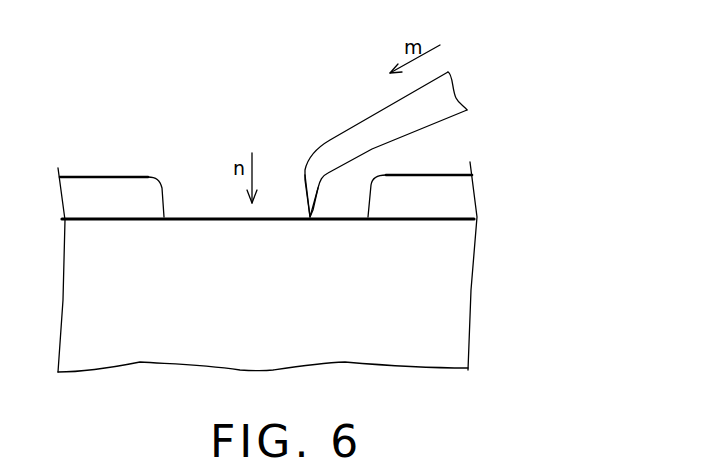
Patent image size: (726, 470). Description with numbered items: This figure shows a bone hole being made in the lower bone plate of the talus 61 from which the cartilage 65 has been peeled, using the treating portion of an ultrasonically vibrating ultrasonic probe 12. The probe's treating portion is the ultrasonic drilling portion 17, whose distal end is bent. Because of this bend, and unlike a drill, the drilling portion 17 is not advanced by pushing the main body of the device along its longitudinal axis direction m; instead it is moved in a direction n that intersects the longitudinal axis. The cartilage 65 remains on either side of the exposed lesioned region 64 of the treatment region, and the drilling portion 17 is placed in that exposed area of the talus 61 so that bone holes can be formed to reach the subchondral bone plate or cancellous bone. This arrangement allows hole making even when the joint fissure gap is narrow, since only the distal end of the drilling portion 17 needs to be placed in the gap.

The ultrasonic probe 12 is at (390, 107).
The ultrasonic drilling portion 17 is at (307, 200).
The talus 61 is at (457, 293).
The lesioned region 64 is at (212, 178).
The cartilage 65 is at (457, 198).